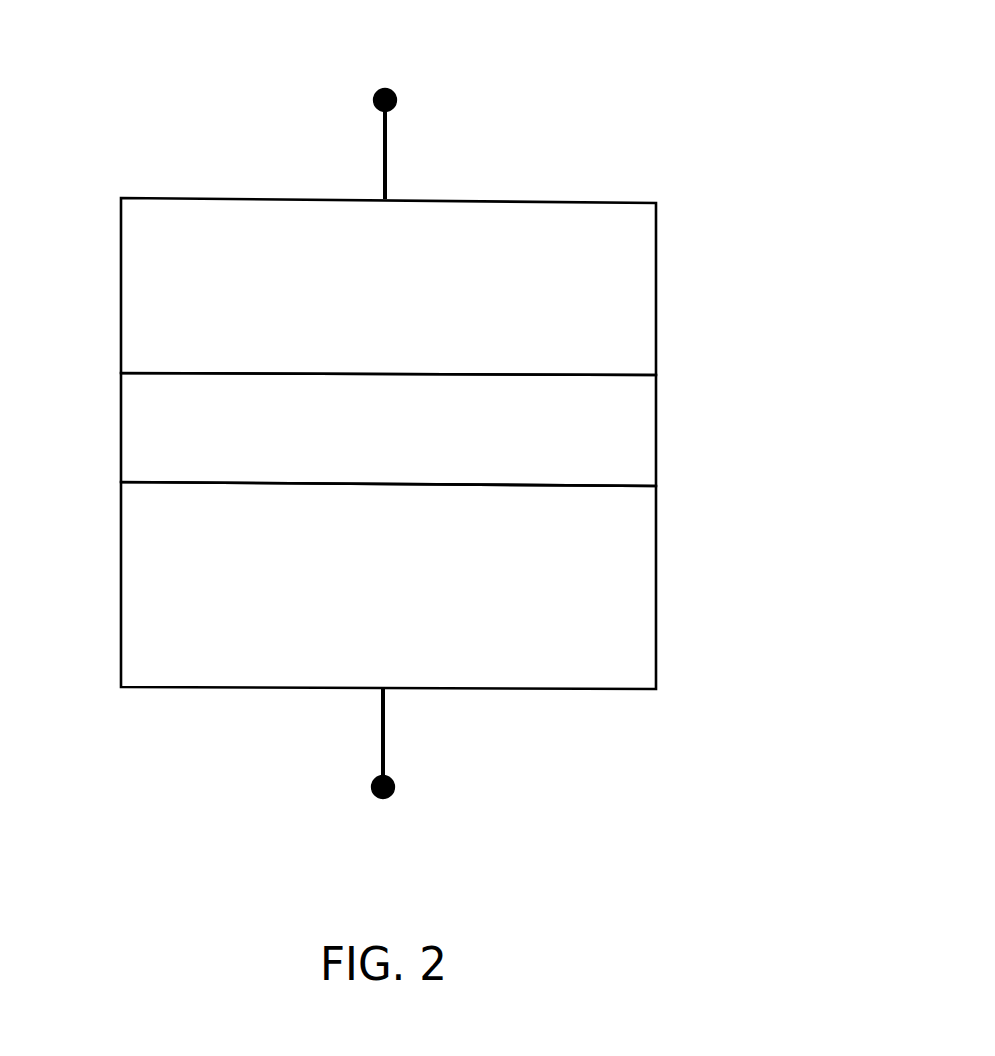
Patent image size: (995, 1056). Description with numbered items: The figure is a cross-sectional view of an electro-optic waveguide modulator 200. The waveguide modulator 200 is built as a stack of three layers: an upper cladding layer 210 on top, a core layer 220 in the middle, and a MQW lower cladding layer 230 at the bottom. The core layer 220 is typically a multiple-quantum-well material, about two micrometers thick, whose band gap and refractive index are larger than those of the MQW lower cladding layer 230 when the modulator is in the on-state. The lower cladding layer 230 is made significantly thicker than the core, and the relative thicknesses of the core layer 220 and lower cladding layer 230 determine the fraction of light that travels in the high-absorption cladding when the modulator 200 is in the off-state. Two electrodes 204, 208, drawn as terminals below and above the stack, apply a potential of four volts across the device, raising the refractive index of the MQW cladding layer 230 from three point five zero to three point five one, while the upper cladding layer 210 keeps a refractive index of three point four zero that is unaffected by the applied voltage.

The waveguide modulator 200 is at (487, 353).
The electrode 204 is at (395, 790).
The electrode 208 is at (397, 100).
The upper cladding layer 210 is at (388, 286).
The core layer 220 is at (388, 429).
The MQW lower cladding layer 230 is at (388, 585).